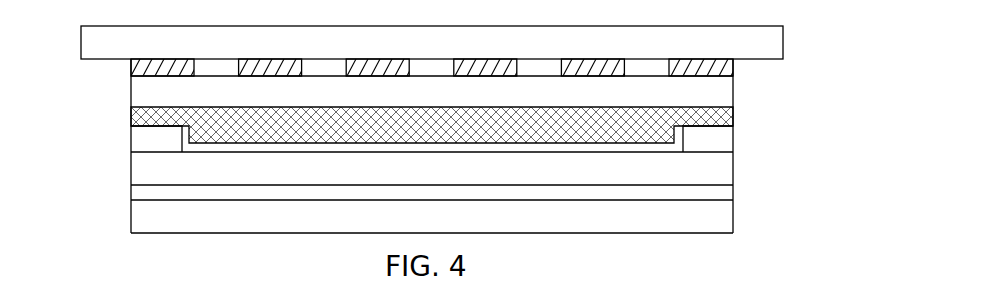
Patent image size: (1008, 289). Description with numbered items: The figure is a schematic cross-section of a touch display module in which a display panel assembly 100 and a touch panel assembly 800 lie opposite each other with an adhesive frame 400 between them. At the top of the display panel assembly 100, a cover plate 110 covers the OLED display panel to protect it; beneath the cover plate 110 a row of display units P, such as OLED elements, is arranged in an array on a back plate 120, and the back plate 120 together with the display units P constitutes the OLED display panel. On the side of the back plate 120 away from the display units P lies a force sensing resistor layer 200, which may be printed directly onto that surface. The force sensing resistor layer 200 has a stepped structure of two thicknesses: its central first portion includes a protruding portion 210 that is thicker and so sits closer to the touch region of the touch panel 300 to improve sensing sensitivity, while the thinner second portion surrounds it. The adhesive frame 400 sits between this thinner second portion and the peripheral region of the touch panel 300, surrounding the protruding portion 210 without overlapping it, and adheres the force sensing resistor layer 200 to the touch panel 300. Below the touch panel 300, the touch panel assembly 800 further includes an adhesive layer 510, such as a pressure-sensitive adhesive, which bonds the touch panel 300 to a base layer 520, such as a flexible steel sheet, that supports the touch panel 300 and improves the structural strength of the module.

The display panel assembly 100 is at (836, 25).
The cover plate 110 is at (768, 43).
The display units P is at (733, 68).
The back plate 120 is at (733, 92).
The force sensing resistor layer 200 is at (733, 117).
The protruding portion 210 is at (213, 135).
The adhesive frame 400 is at (722, 140).
The touch panel 300 is at (722, 172).
The adhesive layer 510 is at (728, 196).
The base layer 520 is at (722, 220).
The touch panel assembly 800 is at (830, 225).